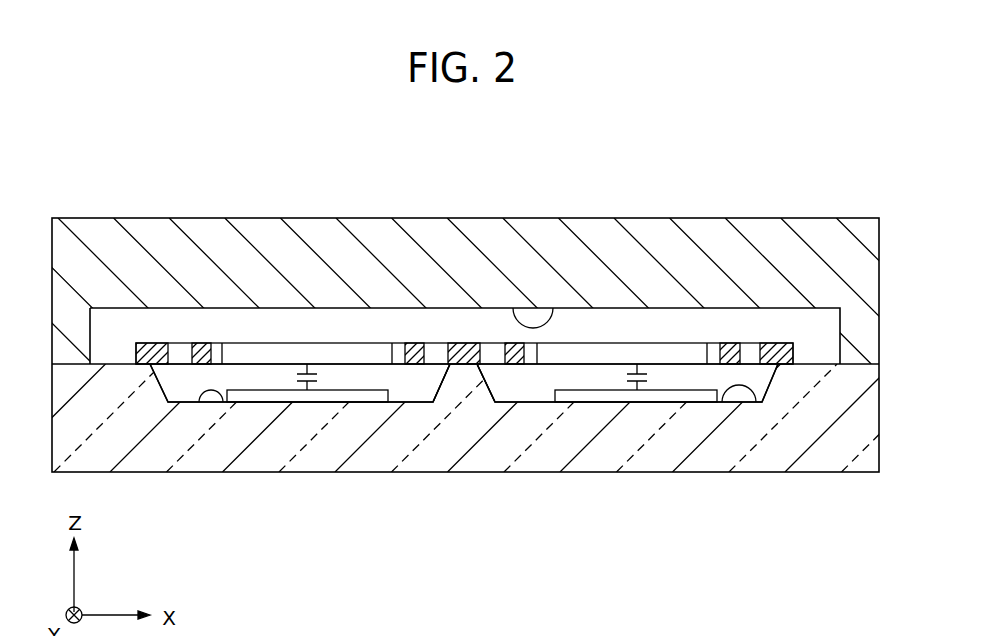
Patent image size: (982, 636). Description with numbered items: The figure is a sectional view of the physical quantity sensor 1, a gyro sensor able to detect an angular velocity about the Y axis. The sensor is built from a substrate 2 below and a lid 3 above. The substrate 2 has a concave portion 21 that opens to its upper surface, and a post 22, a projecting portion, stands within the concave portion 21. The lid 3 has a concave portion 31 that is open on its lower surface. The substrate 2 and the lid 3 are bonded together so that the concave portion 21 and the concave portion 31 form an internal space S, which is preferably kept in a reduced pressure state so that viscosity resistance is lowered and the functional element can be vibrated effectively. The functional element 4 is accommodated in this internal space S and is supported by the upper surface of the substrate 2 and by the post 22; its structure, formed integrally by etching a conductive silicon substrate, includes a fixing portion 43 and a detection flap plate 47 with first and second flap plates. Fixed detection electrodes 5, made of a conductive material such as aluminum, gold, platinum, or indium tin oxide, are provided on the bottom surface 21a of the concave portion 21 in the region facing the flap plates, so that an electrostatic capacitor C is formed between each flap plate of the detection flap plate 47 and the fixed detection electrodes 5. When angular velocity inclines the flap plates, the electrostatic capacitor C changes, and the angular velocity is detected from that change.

The physical quantity sensor 1 is at (819, 128).
The substrate 2 is at (800, 478).
The lid 3 is at (600, 210).
The functional element 4 is at (353, 333).
The fixed detection electrodes 5 is at (311, 392).
The concave portion 21 is at (158, 376).
The bottom surface 21a is at (199, 402).
The post 22 is at (463, 374).
The concave portion 31 is at (514, 306).
The fixing portion 43 is at (148, 343).
The detection flap plate 47 is at (255, 353).
The internal space S is at (298, 328).
The electrostatic capacitor C is at (320, 378).